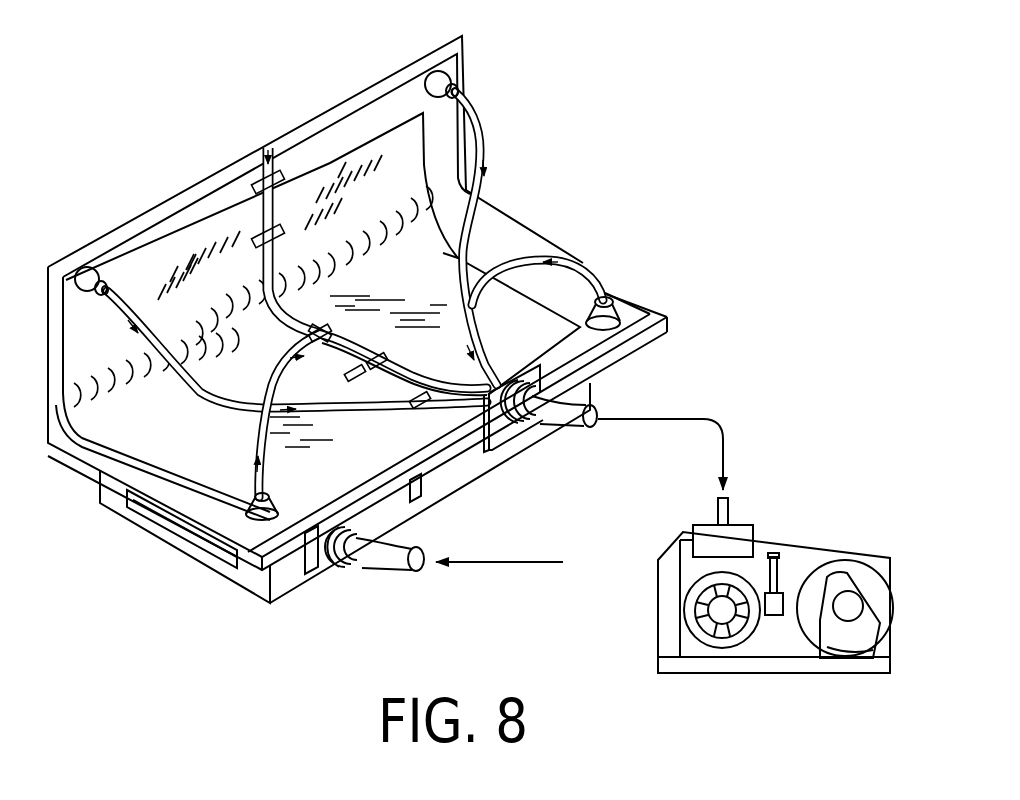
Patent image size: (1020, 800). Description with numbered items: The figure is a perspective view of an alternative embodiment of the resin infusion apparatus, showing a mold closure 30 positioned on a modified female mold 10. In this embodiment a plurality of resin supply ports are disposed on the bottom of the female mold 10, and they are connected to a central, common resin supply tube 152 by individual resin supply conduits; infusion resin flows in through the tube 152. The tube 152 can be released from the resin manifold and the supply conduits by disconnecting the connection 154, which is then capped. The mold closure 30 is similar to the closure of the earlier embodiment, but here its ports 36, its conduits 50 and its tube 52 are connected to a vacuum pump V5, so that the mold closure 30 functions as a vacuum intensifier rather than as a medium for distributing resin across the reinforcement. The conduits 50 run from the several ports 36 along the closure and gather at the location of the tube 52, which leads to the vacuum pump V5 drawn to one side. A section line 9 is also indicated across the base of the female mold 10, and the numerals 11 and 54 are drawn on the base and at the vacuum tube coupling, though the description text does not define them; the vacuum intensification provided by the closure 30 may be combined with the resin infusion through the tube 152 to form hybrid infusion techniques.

The female mold 10 is at (757, 307).
The base box 11 is at (569, 449).
The mold closure 30 is at (355, 133).
The ports 36 is at (550, 20).
The conduits 50 is at (585, 260).
The tube 52 is at (652, 427).
The vacuum coupling 54 is at (521, 428).
The central, common resin supply tube 152 is at (421, 575).
The connection 154 is at (345, 567).
The section line 9 is at (268, 621).
The vacuum pump V5 is at (741, 677).